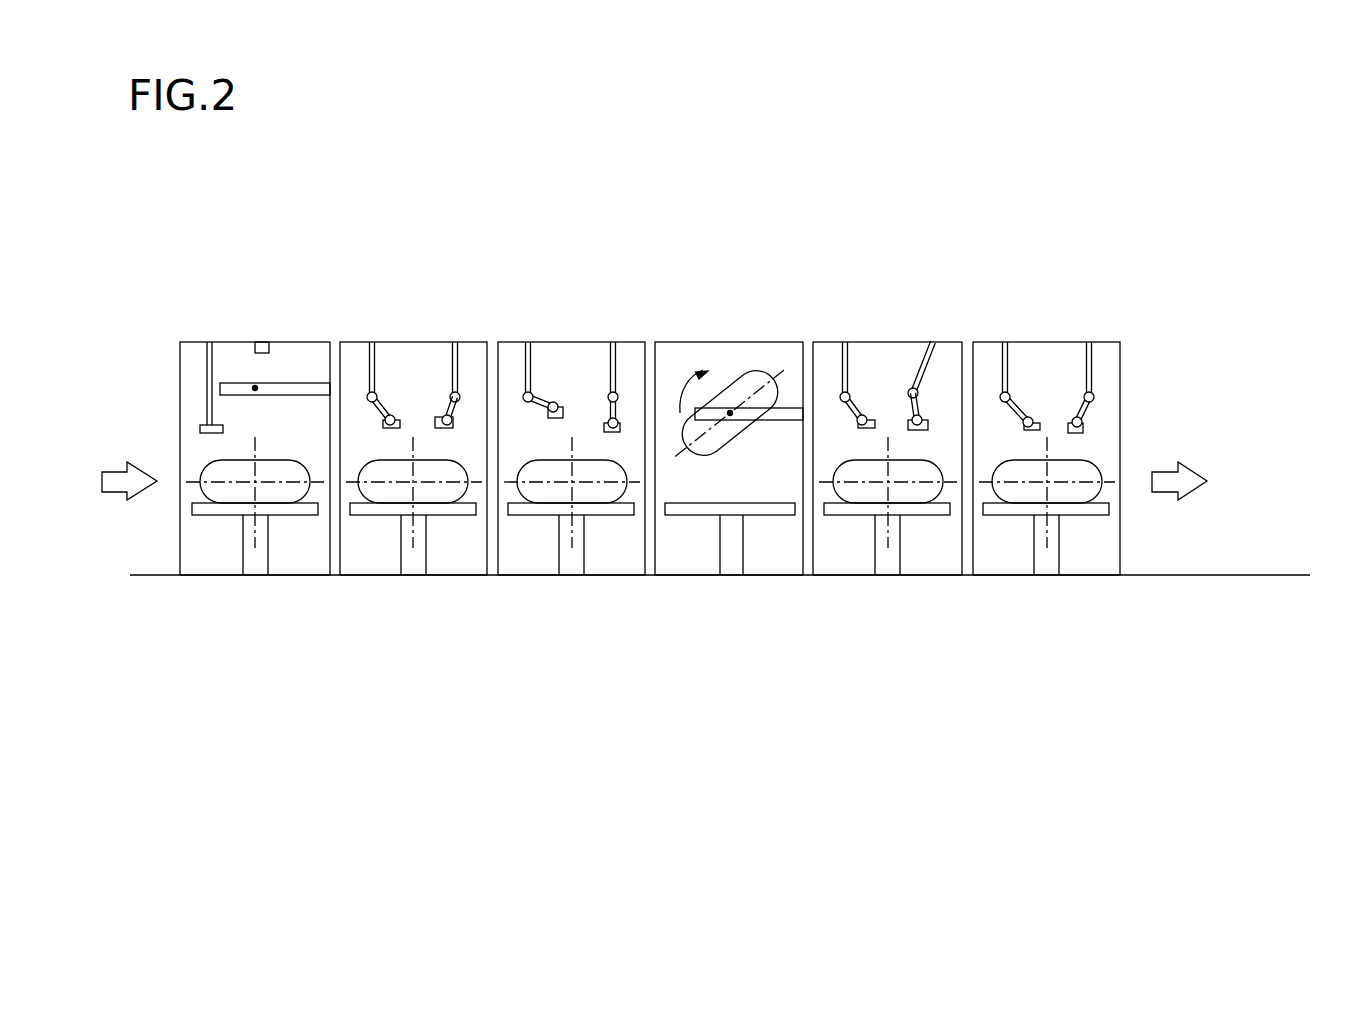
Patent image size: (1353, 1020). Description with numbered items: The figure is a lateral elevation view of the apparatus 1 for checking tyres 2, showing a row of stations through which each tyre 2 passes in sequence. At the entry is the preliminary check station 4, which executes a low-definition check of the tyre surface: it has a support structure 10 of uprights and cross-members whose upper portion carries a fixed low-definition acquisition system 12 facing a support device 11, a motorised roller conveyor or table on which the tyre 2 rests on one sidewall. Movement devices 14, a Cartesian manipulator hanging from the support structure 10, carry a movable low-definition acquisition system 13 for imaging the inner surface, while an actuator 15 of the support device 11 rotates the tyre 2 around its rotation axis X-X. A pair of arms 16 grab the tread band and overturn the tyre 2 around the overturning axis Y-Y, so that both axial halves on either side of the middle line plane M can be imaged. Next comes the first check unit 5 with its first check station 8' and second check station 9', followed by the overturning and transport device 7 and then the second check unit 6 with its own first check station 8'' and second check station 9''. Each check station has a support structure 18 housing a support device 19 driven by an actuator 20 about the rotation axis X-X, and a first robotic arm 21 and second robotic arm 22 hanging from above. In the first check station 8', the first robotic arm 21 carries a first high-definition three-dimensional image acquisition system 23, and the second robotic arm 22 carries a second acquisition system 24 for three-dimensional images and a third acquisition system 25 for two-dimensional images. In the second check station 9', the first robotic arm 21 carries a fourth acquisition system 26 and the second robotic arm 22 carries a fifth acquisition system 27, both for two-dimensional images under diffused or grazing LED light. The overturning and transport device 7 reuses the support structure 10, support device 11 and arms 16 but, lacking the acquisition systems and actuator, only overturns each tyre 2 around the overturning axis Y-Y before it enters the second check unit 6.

The apparatus for checking tyres 1 is at (945, 190).
The tyre 2 is at (217, 490).
The preliminary check station 4 is at (250, 325).
The first check unit 5 is at (498, 323).
The second check unit 6 is at (972, 323).
The overturning and transport device 7 is at (732, 322).
The first check station 8' is at (430, 215).
The first check station 8'' is at (861, 202).
The second check station 9' is at (651, 207).
The second check station 9'' is at (1162, 398).
The support structure 10 is at (180, 360).
The support device 11 is at (198, 518).
The fixed low-definition acquisition system 12 is at (262, 340).
The movable low-definition acquisition system 13 is at (200, 432).
The movement devices 14 is at (207, 383).
The actuator 15 is at (267, 558).
The arms 16 is at (287, 383).
The support structure 18 is at (440, 342).
The support device 19 is at (363, 515).
The actuator 20 is at (417, 562).
The first robotic arm 21 is at (378, 355).
The second robotic arm 22 is at (452, 358).
The first high-definition 3D image acquisition system 23 is at (414, 424).
The second acquisition system 24 is at (447, 410).
The third acquisition system 25 is at (440, 428).
The fourth acquisition system 26 is at (558, 406).
The fifth acquisition system 27 is at (612, 432).
The axial middle line plane M is at (232, 483).
The rotation axis X-X is at (253, 535).
The overturning axis Y-Y is at (253, 385).